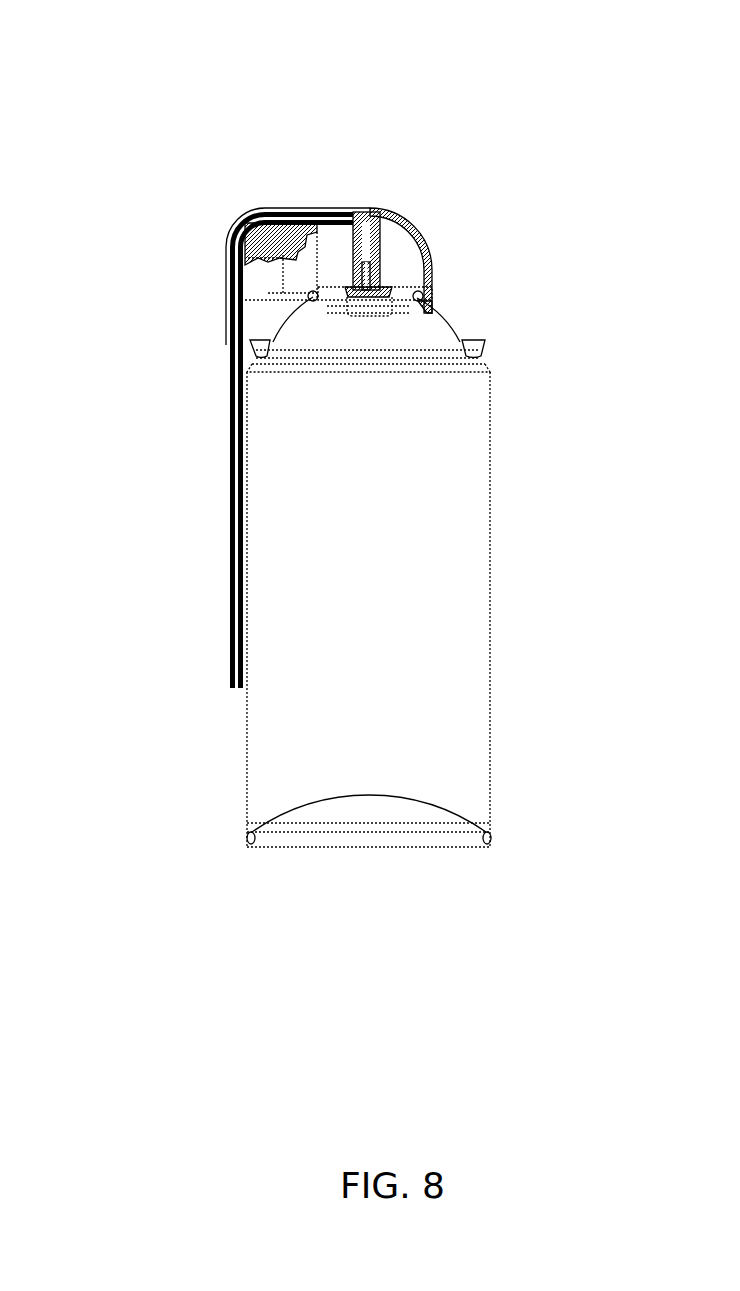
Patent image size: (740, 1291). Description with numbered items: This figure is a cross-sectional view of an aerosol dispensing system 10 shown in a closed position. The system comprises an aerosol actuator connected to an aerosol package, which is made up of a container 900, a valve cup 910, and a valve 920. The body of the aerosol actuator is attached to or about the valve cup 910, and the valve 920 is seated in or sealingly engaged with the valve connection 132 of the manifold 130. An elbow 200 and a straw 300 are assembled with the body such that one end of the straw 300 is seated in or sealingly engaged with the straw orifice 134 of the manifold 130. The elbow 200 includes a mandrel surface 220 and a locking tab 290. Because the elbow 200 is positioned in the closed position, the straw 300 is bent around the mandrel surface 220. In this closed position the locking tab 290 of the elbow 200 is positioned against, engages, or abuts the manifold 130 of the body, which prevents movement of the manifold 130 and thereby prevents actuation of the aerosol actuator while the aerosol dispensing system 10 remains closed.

The aerosol dispensing system 10 is at (108, 142).
The manifold 130 is at (380, 240).
The valve connection 132 is at (380, 278).
The straw orifice 134 is at (308, 215).
The elbow 200 is at (266, 238).
The mandrel surface 220 is at (228, 240).
The locking tab 290 is at (307, 240).
The straw 300 is at (232, 455).
The container 900 is at (392, 605).
The valve cup 910 is at (422, 310).
The valve 920 is at (385, 281).